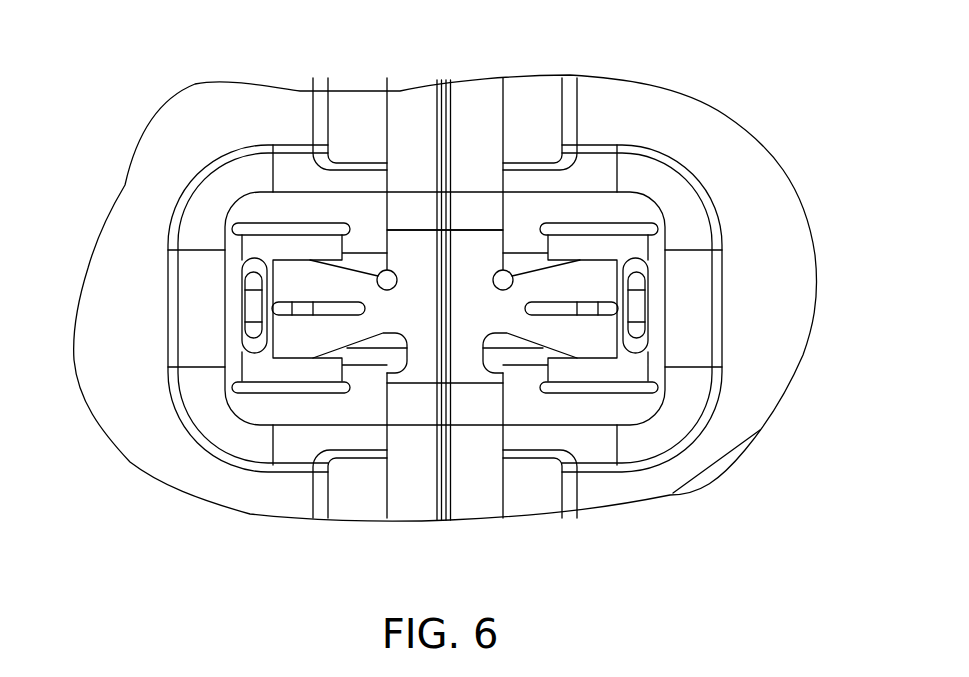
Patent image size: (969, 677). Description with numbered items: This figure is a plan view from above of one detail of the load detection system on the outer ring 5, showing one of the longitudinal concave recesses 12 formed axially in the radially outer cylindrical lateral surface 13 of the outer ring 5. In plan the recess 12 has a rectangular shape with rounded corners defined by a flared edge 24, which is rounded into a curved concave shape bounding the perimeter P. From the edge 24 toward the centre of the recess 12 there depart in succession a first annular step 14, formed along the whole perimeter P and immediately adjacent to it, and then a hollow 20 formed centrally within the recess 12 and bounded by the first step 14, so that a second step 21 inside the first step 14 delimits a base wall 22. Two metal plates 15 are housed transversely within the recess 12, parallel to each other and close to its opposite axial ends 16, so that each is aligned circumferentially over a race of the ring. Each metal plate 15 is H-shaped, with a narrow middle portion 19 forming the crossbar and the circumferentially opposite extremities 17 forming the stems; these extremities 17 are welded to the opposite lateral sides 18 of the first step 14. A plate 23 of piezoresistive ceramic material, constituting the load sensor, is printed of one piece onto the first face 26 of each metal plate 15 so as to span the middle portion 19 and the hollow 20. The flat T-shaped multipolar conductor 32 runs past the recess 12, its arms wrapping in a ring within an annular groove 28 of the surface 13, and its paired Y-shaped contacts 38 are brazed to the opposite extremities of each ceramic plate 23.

The outer ring 5 is at (580, 214).
The recess 12 is at (692, 168).
The radially outer cylindrical lateral surface 13 is at (195, 113).
The first annular step 14 is at (523, 220).
The metal plate 15 is at (666, 229).
The axial ends 16 is at (732, 302).
The extremities 17 is at (290, 240).
The lateral sides 18 is at (378, 268).
The middle portion 19 is at (612, 308).
The hollow 20 is at (222, 262).
The second step 21 is at (382, 334).
The base wall 22 is at (617, 362).
The plate of piezoresistive ceramic material 23 is at (622, 344).
The flared edge 24 is at (205, 222).
The first face 26 is at (322, 243).
The annular groove 28 is at (359, 496).
The flat T-shaped multipolar conductor 32 is at (530, 100).
The Y-shaped contacts 38 is at (650, 275).
The perimeter P is at (688, 450).